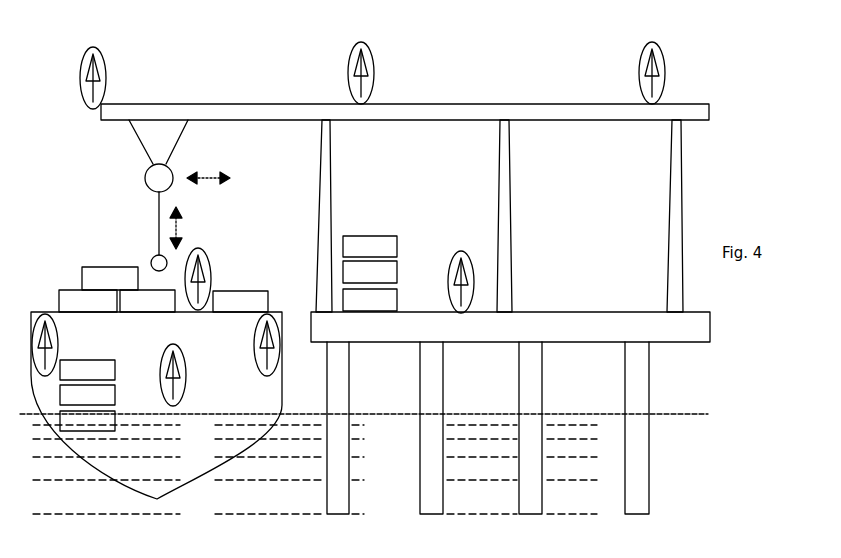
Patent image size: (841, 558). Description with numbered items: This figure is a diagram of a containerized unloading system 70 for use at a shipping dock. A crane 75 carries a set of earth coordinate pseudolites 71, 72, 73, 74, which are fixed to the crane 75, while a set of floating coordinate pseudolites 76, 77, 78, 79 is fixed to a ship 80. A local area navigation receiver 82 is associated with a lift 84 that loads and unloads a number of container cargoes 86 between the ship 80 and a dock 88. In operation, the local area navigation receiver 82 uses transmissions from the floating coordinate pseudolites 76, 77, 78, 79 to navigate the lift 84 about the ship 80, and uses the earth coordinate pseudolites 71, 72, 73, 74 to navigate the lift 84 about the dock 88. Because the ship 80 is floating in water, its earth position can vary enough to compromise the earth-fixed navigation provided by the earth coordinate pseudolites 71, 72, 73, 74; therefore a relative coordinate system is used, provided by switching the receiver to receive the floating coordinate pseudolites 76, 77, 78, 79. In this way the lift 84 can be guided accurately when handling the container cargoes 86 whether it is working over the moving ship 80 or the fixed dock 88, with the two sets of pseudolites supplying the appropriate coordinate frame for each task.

The containerized unloading system 70 is at (530, 29).
The earth coordinate pseudolite 71 is at (670, 65).
The earth coordinate pseudolite 72 is at (462, 251).
The earth coordinate pseudolite 73 is at (373, 56).
The earth coordinate pseudolite 74 is at (105, 62).
The crane 75 is at (479, 104).
The floating coordinate pseudolite 76 is at (205, 252).
The floating coordinate pseudolite 77 is at (255, 352).
The floating coordinate pseudolite 78 is at (184, 357).
The floating coordinate pseudolite 79 is at (58, 348).
The ship 80 is at (284, 377).
The local area navigation receiver 82 is at (155, 256).
The lift 84 is at (147, 178).
The container cargo 86 is at (388, 236).
The dock 88 is at (580, 312).